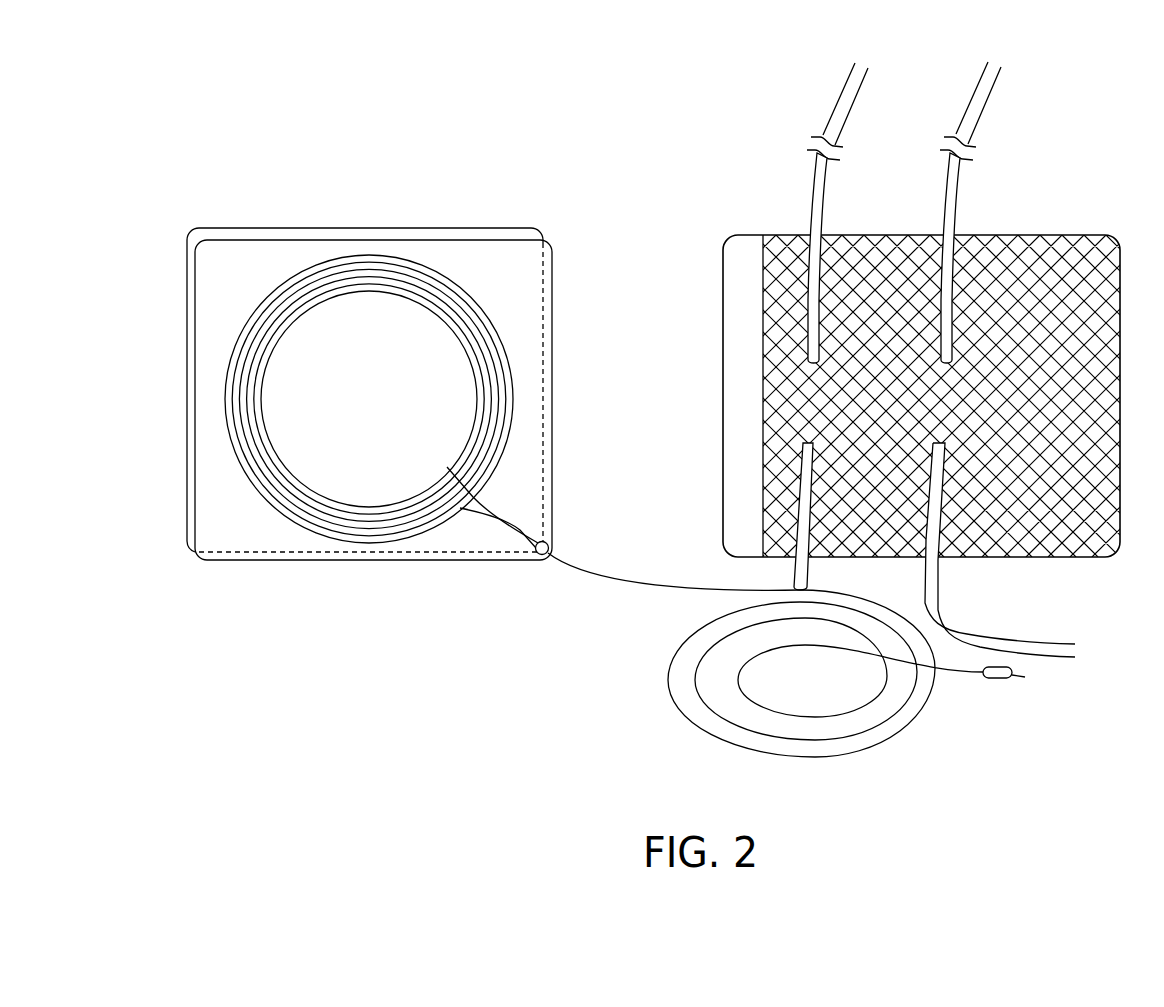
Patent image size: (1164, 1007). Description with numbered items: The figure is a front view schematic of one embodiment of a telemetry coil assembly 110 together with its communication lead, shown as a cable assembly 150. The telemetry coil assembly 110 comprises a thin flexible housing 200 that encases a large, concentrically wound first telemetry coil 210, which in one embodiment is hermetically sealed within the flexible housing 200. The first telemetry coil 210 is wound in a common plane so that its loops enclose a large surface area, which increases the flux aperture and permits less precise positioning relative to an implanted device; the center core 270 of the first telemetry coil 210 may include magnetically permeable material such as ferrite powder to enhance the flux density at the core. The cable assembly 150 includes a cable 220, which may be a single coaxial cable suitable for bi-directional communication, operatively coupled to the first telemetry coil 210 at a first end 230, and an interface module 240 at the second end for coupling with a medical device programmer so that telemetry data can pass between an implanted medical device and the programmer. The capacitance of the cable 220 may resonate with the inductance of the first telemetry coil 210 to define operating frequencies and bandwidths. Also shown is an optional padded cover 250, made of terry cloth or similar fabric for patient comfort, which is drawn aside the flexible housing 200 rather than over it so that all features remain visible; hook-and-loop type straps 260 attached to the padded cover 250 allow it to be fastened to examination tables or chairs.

The telemetry coil assembly 110 is at (672, 146).
The cable assembly 150 is at (968, 771).
The flexible housing 200 is at (483, 226).
The first telemetry coil 210 is at (467, 295).
The cable 220 is at (668, 683).
The first end 230 is at (550, 540).
The interface module 240 is at (998, 680).
The padded cover 250 is at (1038, 234).
The hook-and-loop type straps 260 is at (983, 106).
The center core 270 is at (307, 330).